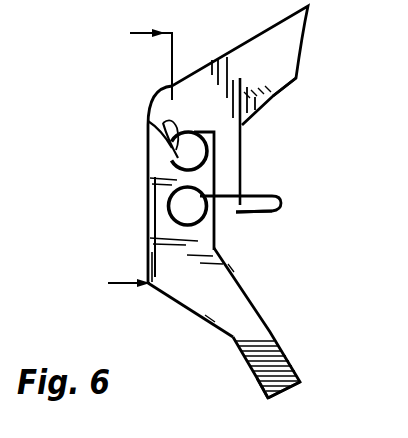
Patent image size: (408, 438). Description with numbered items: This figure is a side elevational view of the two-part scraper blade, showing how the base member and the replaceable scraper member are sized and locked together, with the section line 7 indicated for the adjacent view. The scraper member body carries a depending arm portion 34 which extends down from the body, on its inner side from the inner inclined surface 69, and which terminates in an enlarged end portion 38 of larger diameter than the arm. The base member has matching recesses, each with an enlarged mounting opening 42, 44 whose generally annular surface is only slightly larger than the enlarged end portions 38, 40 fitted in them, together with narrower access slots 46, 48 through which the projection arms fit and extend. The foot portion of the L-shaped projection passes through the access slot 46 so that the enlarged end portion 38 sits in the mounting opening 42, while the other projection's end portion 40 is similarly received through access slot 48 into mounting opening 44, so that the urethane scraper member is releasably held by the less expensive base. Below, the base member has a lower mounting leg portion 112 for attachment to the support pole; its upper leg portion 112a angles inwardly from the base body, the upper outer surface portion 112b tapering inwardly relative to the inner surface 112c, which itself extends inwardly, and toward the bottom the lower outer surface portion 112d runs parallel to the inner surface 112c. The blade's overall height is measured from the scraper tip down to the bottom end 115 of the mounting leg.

The section line 7- 7 is at (131, 163).
The arm portion 34 is at (233, 160).
The enlarged end portion 38 is at (240, 200).
The enlarged end portion 40 is at (150, 127).
The mounting opening 42 is at (170, 222).
The mounting opening 44 is at (166, 163).
The access slot 46 is at (203, 216).
The access slot 48 is at (236, 212).
The inner inclined surface 69 is at (273, 96).
The lower mounting leg portion 112 is at (270, 332).
The upper leg portion 112a is at (215, 302).
The upper outer surface portion 112b is at (180, 307).
The inner surface 112c is at (232, 273).
The lower outer surface portion 112d is at (257, 383).
The bottom end 115 is at (297, 387).